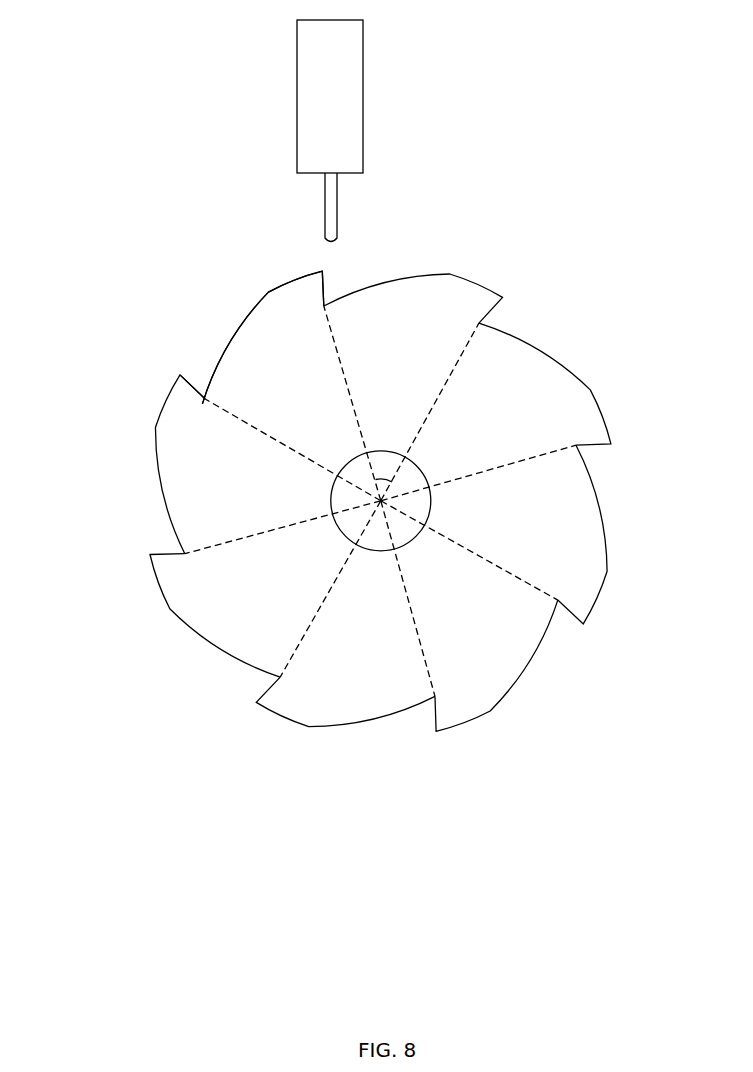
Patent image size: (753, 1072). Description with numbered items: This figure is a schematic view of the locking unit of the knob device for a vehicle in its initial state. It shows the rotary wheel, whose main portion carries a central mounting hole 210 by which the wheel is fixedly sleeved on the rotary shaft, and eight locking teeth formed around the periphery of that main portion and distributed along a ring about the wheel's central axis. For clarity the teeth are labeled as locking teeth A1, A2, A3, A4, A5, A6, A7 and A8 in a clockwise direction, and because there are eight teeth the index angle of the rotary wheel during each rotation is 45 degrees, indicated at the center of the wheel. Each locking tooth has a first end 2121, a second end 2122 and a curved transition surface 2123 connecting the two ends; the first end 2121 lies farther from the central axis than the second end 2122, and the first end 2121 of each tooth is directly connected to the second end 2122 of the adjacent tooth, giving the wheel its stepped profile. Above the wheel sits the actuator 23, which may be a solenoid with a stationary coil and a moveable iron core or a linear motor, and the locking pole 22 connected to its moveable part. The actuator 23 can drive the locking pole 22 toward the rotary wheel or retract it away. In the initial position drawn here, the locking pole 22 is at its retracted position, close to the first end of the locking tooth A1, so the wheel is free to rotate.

The actuator 23 is at (338, 100).
The locking pole 22 is at (333, 196).
The mounting hole 210 is at (348, 522).
The first end 2121 is at (315, 263).
The second end 2122 is at (200, 388).
The transition surface 2123 is at (268, 278).
The locking tooth A1 is at (247, 343).
The locking tooth A2 is at (410, 300).
The locking tooth A3 is at (545, 375).
The locking tooth A4 is at (580, 538).
The locking tooth A5 is at (498, 673).
The locking tooth A6 is at (328, 705).
The locking tooth A7 is at (167, 580).
The locking tooth A8 is at (180, 468).
The index angle 45 is at (383, 472).